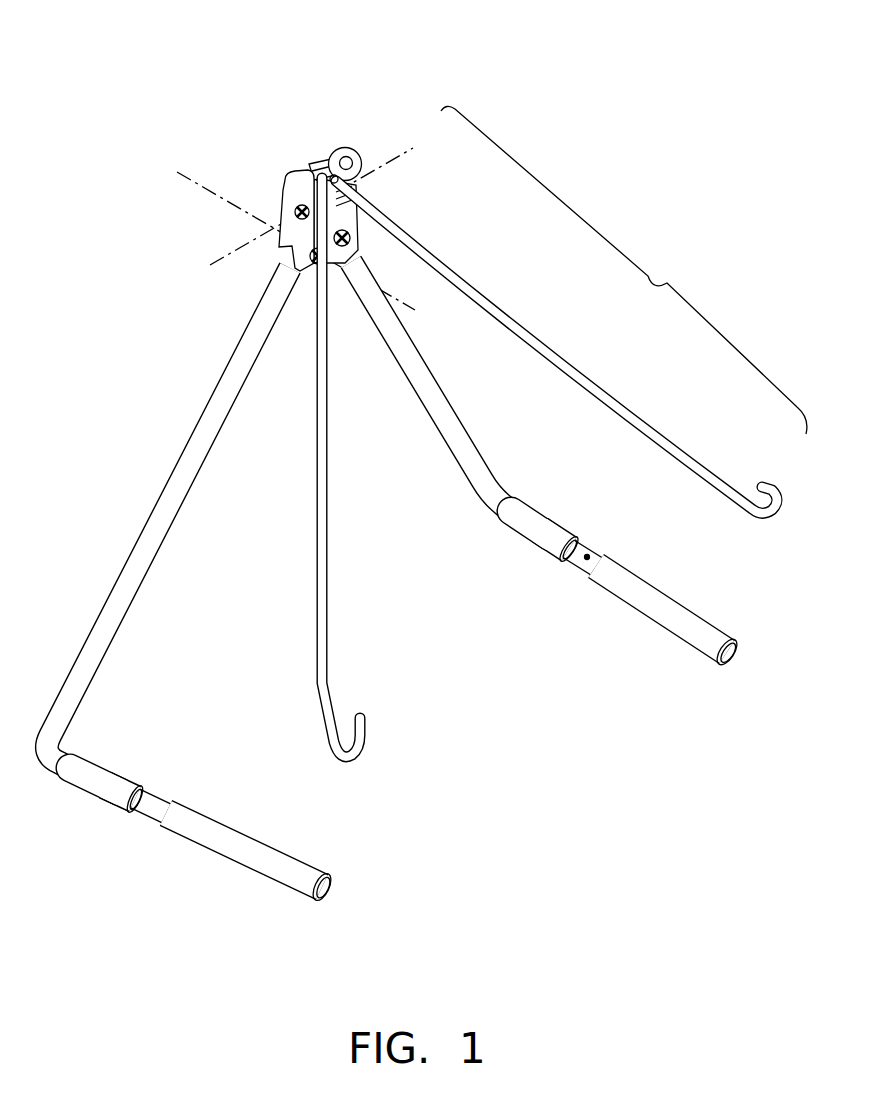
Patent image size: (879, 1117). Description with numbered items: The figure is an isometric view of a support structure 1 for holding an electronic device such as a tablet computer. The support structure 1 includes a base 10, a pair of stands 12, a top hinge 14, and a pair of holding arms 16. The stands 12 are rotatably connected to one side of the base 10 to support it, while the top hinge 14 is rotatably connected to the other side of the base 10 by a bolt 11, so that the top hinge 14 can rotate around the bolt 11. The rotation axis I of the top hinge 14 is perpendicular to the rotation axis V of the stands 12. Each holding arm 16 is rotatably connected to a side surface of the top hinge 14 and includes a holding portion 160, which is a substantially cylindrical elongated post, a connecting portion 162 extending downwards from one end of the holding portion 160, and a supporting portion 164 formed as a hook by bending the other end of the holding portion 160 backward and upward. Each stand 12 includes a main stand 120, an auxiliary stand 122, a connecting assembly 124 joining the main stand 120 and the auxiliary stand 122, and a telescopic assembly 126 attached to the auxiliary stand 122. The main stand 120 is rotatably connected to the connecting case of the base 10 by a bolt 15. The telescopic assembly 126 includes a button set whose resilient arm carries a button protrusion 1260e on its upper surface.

The support structure 1 is at (186, 70).
The base 10 is at (330, 212).
The bolt 11 is at (298, 205).
The stand 12 is at (164, 438).
The top hinge 14 is at (318, 168).
The bolt 15 is at (357, 241).
The holding arm 16 is at (564, 431).
The main stand 120 is at (167, 510).
The auxiliary stand 122 is at (577, 558).
The connecting assembly 124 is at (100, 788).
The telescopic assembly 126 is at (200, 827).
The holding portion 160 is at (477, 291).
The connecting portion 162 is at (360, 155).
The supporting portion 164 is at (767, 487).
The button protrusion 1260e is at (588, 552).
The rotation axis of the stands V is at (206, 187).
The rotation axis of the top hinge I is at (220, 258).